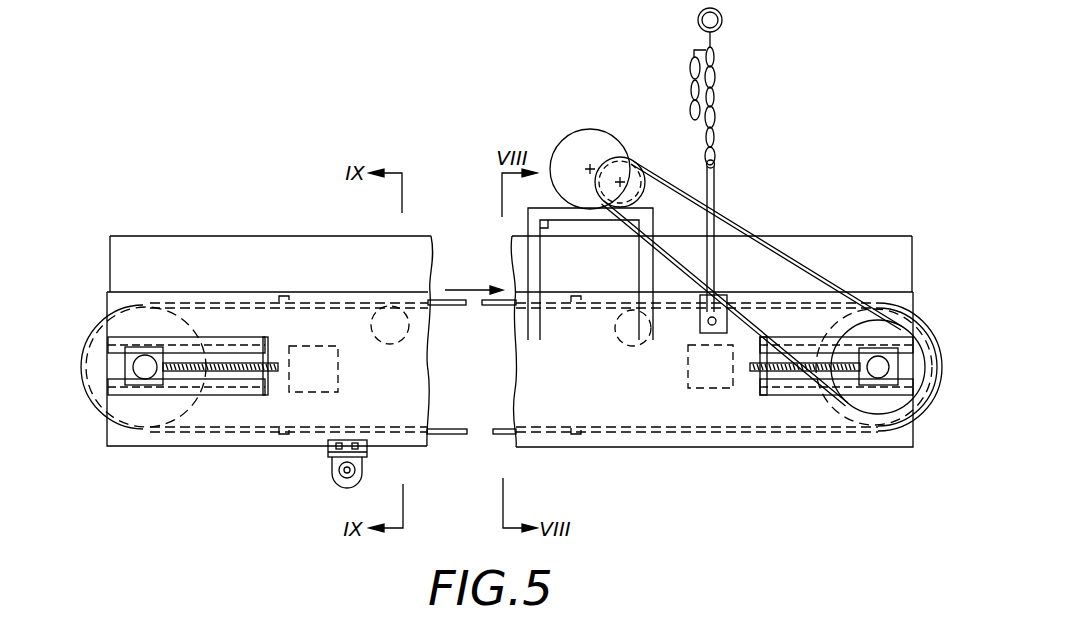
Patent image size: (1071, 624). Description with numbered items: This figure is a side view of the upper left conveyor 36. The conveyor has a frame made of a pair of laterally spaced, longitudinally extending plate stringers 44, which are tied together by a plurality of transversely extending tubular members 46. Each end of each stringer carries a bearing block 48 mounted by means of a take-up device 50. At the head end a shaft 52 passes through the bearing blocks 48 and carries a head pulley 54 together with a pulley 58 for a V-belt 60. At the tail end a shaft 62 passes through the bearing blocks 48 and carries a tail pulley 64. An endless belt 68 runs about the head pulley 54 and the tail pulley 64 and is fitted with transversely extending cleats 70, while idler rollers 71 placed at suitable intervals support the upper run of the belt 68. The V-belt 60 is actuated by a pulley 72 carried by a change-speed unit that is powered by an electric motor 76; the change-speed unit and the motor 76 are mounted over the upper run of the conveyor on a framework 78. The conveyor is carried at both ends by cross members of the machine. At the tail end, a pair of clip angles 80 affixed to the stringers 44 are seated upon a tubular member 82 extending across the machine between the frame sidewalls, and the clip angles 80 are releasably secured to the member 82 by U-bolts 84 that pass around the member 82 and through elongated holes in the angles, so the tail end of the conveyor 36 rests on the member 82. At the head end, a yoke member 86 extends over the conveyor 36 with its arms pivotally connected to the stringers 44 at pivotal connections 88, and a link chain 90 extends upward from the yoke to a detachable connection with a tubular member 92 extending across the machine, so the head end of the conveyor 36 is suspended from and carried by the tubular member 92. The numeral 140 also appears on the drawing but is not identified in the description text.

The conveyor 36 is at (690, 462).
The plate stringers 44 is at (512, 395).
The tubular members 46 is at (330, 383).
The bearing block 48 is at (133, 380).
The take-up device 50 is at (232, 370).
The shaft 52 is at (885, 370).
The head pulley 54 is at (900, 372).
The pulley 58 is at (887, 420).
The V-belt 60 is at (740, 230).
The shaft 62 is at (133, 368).
The tail pulley 64 is at (100, 350).
The endless belt 68 is at (447, 437).
The cleats 70 is at (283, 297).
The idler rollers 71 is at (400, 345).
The pulley 72 is at (630, 178).
The electric motor 76 is at (575, 145).
The framework 78 is at (573, 215).
The clip angles 80 is at (368, 452).
The tubular member 82 is at (333, 480).
The U-bolts 84 is at (350, 472).
The yoke member 86 is at (716, 192).
The pivotal connection 88 is at (700, 321).
The link chain 90 is at (718, 88).
The tubular member 92 is at (722, 20).
The wall 140 is at (838, 240).